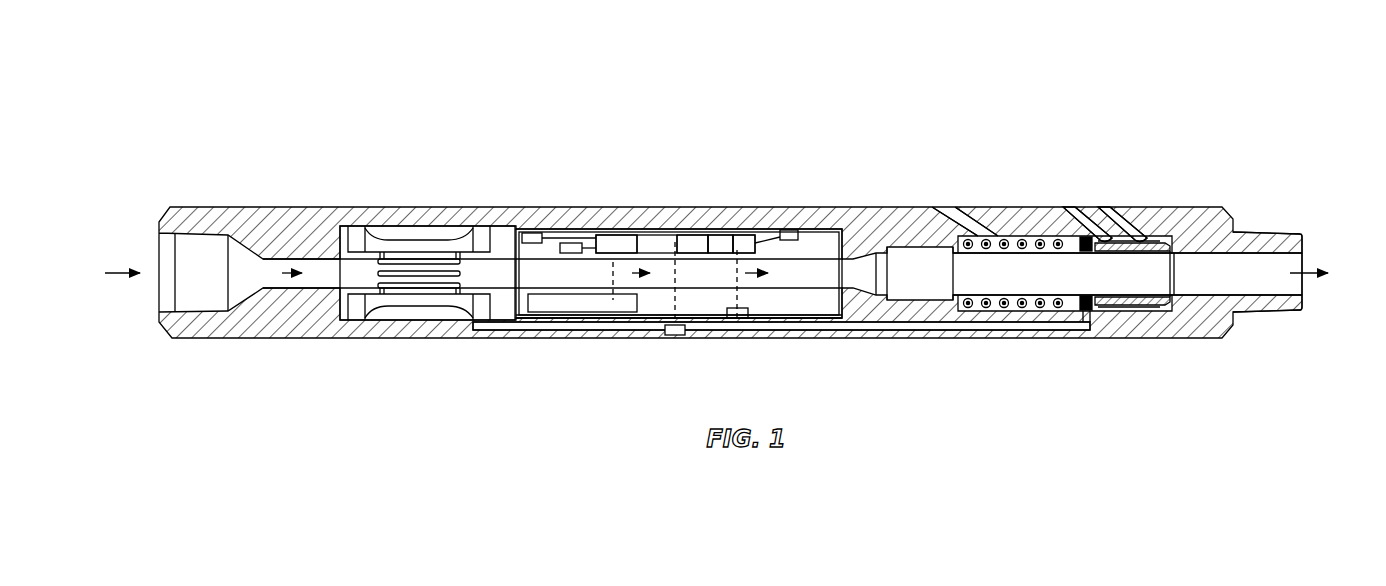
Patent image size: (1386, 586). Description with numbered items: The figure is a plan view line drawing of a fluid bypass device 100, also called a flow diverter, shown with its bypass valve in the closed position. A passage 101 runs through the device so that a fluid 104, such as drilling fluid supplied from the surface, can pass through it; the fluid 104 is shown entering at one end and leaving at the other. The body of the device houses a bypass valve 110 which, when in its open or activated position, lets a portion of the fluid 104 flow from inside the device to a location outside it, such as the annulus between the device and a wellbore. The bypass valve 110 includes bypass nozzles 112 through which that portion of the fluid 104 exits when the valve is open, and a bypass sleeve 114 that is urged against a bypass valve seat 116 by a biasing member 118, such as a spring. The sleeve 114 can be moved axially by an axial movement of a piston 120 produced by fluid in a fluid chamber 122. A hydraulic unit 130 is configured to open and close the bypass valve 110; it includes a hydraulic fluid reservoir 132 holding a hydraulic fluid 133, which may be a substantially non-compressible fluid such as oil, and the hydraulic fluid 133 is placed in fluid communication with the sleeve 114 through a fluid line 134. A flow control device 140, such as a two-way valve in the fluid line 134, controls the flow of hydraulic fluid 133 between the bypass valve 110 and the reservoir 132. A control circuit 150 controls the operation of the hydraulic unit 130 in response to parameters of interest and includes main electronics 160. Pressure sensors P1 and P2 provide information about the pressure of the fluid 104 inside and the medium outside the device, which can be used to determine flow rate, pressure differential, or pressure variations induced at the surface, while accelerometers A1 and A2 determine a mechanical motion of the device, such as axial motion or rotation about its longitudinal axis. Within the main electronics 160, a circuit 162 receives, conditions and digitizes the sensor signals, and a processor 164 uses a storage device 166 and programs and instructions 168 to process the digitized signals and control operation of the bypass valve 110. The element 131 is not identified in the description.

The fluid bypass device 100 is at (237, 72).
The passage 101 is at (987, 289).
The fluid 104 is at (117, 271).
The bypass valve 110 is at (1019, 228).
The bypass nozzles 112 is at (1082, 199).
The bypass sleeve 114 is at (1240, 250).
The bypass valve seat 116 is at (1174, 304).
The biasing member 118 is at (978, 306).
The piston 120 is at (1075, 316).
The fluid chamber 122 is at (1100, 312).
The hydraulic unit 130 is at (426, 218).
The power storage 131 is at (560, 313).
The hydraulic fluid reservoir 132 is at (415, 306).
The hydraulic fluid 133 is at (500, 323).
The fluid line 134 is at (595, 338).
The flow control device 140 is at (674, 336).
The control circuit 150 is at (646, 201).
The main electronics 160 is at (697, 224).
The circuit 162 is at (610, 236).
The processor 164 is at (686, 254).
The storage device 166 is at (718, 236).
The programs and instructions 168 is at (756, 235).
The pressure sensor P1 is at (531, 234).
The pressure sensor P2 is at (566, 243).
The accelerometer A1 is at (742, 319).
The accelerometer A2 is at (794, 229).